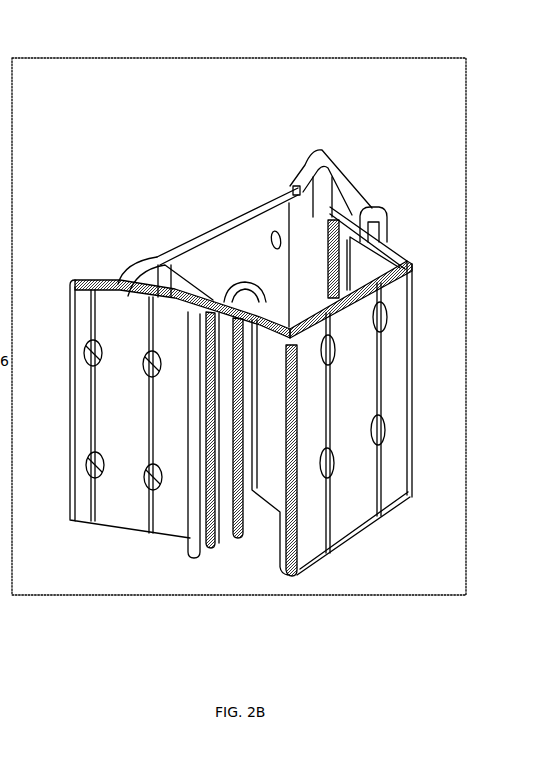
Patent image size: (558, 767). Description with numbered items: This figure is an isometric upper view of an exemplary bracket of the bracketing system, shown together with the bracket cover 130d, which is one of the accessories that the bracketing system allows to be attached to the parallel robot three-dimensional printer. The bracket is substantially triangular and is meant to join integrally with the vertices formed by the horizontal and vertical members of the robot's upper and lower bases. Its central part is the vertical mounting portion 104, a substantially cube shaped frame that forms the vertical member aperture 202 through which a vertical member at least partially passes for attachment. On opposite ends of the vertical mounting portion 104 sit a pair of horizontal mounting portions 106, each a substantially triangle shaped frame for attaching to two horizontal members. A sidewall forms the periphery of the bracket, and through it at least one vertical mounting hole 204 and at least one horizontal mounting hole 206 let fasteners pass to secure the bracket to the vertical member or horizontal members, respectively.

The bracket cover 130d is at (200, 58).
The vertical mounting portion 104 is at (220, 225).
The horizontal mounting portion 106 is at (123, 280).
The vertical member aperture 202 is at (290, 188).
The vertical mounting hole 204 is at (380, 320).
The horizontal mounting hole 206 is at (150, 480).